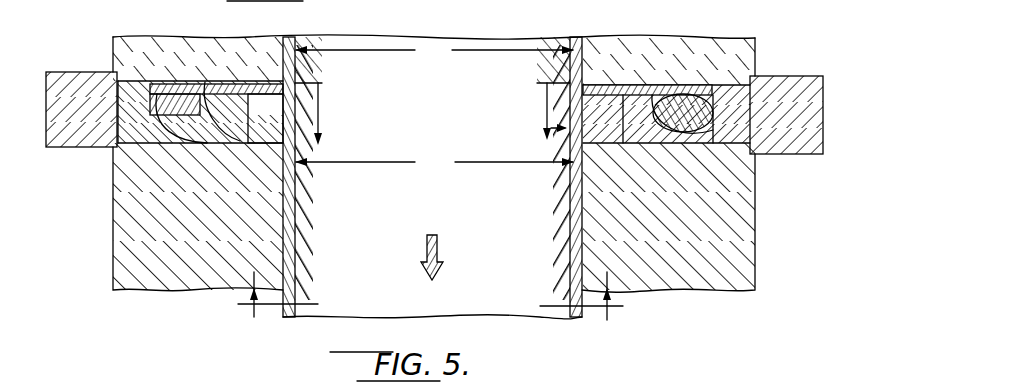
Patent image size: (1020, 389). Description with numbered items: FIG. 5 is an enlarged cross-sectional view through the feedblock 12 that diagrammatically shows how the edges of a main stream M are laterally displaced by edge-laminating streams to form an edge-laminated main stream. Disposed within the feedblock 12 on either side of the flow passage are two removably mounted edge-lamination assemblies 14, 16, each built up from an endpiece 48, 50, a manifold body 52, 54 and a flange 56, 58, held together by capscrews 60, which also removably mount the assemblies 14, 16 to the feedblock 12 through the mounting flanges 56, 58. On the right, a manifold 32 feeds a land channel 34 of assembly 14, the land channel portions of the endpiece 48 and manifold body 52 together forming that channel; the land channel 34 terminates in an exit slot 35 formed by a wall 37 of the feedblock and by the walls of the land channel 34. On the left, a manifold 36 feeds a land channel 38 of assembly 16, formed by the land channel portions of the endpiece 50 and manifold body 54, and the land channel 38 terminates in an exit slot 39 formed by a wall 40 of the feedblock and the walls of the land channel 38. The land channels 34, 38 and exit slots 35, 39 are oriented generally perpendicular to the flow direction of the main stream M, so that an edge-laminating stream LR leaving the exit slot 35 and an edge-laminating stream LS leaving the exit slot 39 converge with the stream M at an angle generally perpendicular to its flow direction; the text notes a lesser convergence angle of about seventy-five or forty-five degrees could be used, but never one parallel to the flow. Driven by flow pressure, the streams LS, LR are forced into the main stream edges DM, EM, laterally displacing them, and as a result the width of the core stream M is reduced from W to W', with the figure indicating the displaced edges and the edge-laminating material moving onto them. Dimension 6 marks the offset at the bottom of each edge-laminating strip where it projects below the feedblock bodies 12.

The feedblock 12 is at (128, 232).
The edge-lamination assembly 14 is at (722, 150).
The edge-lamination assembly 16 is at (135, 150).
The manifold 32 is at (720, 70).
The land channel 34 is at (660, 95).
The exit slot 35 is at (603, 85).
The manifold 36 is at (125, 56).
The wall 37 is at (628, 90).
The land channel 38 is at (250, 84).
The exit slot 39 is at (282, 90).
The wall 40 is at (295, 42).
The endpiece 48 is at (597, 135).
The endpiece 50 is at (260, 130).
The manifold body 52 is at (648, 140).
The manifold body 54 is at (208, 130).
The flange 56 is at (802, 119).
The flange 58 is at (94, 116).
The capscrews 60 is at (88, 8).
The protrusion distance 6 is at (430, 311).
The edge-laminating stream LS is at (203, 82).
The edge-laminating stream LR is at (663, 95).
The main stream edge EM is at (317, 80).
The main stream edge DM is at (575, 85).
The width of the core stream W is at (434, 50).
The reduced width of the core stream W' is at (434, 162).
The main stream M is at (446, 107).